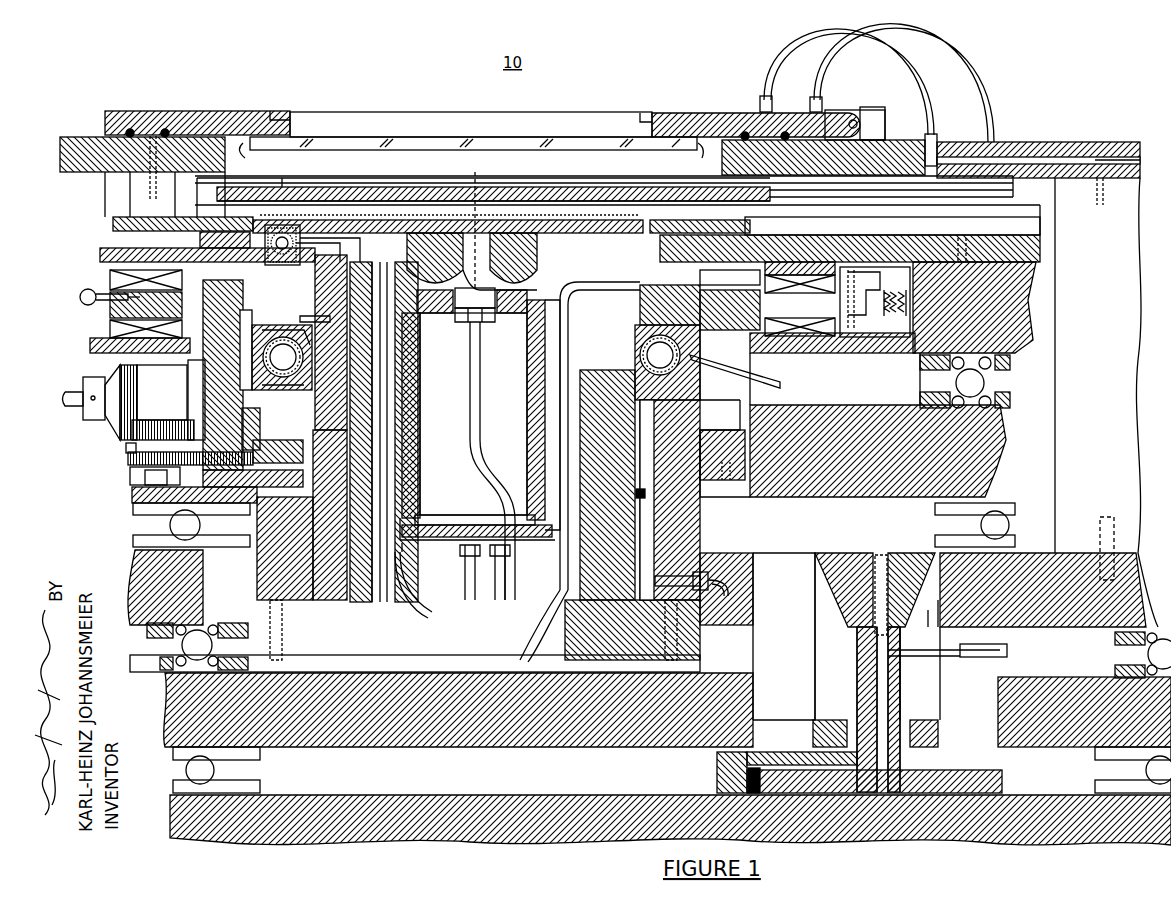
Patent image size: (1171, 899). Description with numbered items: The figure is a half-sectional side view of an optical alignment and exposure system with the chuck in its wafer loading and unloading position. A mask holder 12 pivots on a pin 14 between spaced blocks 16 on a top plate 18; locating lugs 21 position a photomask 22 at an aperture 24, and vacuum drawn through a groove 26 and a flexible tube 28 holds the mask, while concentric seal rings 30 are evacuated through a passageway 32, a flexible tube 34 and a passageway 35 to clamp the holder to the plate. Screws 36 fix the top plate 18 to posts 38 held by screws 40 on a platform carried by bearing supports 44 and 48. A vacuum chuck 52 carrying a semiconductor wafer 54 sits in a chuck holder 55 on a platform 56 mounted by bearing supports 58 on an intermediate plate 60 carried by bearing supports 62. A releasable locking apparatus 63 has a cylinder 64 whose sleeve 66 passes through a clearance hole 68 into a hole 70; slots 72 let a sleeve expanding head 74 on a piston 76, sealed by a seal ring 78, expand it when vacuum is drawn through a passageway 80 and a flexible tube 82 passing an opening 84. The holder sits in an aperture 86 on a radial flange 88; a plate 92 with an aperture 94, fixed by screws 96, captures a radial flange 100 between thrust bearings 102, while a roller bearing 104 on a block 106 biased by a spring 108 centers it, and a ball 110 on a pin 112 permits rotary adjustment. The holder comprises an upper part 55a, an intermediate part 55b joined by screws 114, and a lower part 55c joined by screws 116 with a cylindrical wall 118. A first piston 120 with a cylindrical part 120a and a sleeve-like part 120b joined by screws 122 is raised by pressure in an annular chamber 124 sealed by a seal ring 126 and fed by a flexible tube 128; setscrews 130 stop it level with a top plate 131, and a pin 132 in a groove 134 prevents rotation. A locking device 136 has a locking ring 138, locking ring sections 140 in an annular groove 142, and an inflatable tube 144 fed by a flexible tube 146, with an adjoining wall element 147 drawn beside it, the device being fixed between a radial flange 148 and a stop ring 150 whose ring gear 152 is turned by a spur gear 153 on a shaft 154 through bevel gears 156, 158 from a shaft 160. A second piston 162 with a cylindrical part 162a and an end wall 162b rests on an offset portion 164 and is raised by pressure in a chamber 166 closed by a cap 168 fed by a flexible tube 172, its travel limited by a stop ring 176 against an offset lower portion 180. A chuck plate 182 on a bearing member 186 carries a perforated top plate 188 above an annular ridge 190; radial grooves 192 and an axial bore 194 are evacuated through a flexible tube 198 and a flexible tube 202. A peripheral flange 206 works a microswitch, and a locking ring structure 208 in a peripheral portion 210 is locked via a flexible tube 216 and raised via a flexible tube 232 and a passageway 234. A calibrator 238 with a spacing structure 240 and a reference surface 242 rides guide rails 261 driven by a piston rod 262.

The mask holder 12 is at (193, 113).
The pin 14 is at (858, 125).
The spaced blocks 16 is at (873, 110).
The top plate 18 is at (1035, 142).
The locating lugs 21 is at (472, 158).
The photomask 22 is at (488, 140).
The aperture 24 is at (650, 112).
The groove 26 is at (275, 115).
The flexible tube 28 is at (955, 65).
The resilient seal rings 30 is at (172, 147).
The passageway 32 is at (752, 142).
The flexible tube 34 is at (762, 70).
The passageway 35 is at (1140, 160).
The screws 36 is at (1100, 213).
The posts 38 is at (1152, 478).
The screws 40 is at (1102, 517).
The bearing supports 44 is at (1130, 653).
The bearing supports 48 is at (1085, 771).
The vacuum chuck 52 is at (340, 272).
The semiconductor wafer 54 is at (622, 215).
The chuck holder 55 is at (110, 290).
The annular upper part 55a is at (190, 388).
The annular intermediate part 55b is at (258, 578).
The annular lower part 55c is at (380, 645).
The horizontally movable platform 56 is at (1018, 338).
The bearing supports 58 is at (932, 380).
The intermediate plate 60 is at (990, 482).
The bearing supports 62 is at (950, 525).
The releasable locking apparatus 63 is at (812, 732).
The cylinder 64 is at (717, 768).
The sleeve 66 is at (940, 735).
The enlarged clearance hole 68 is at (998, 696).
The hole 70 is at (940, 600).
The slots 72 is at (792, 650).
The sleeve expanding head 74 is at (850, 553).
The piston 76 is at (962, 796).
The peripheral seal ring 78 is at (754, 796).
The passageway 80 is at (878, 776).
The flexible tube 82 is at (1005, 646).
The opening 84 is at (940, 618).
The aperture 86 is at (762, 352).
The radial flange 88 is at (806, 355).
The plate 92 is at (1045, 258).
The aperture 94 is at (700, 248).
The screws 96 is at (990, 250).
The radial flange 100 is at (775, 270).
The thrust bearings 102 is at (824, 346).
The roller bearing 104 is at (858, 312).
The radially slidable block 106 is at (896, 280).
The spring 108 is at (896, 301).
The ball 110 is at (80, 297).
The pin 112 is at (132, 298).
The screws 114 is at (746, 466).
The screws 116 is at (680, 645).
The cylindrical wall 118 is at (345, 528).
The first piston 120 is at (312, 535).
The hollow cylindrical part 120a is at (527, 376).
The sleeve-like part 120b is at (622, 410).
The screws 122 is at (646, 322).
The annular chamber 124 is at (652, 548).
The peripheral seal ring 126 is at (648, 492).
The flexible tube 128 is at (710, 580).
The setscrews 130 is at (590, 285).
The top plate 131 is at (113, 226).
The pin 132 is at (300, 319).
The longitudinally extending groove 134 is at (340, 343).
The locking device 136 is at (706, 326).
The locking ring 138 is at (240, 330).
The locking ring sections 140 is at (306, 386).
The annular groove 142 is at (238, 364).
The resilient inflatable tube 144 is at (302, 360).
The flexible tube 146 is at (782, 384).
The wall 147 is at (748, 435).
The radial flange 148 is at (240, 292).
The stop ring 150 is at (242, 425).
The ring gear 152 is at (298, 455).
The spur gear 153 is at (128, 460).
The shaft 154 is at (130, 478).
The bevel gear 156 is at (126, 449).
The bevel gear 158 is at (140, 388).
The shaft 160 is at (62, 384).
The second piston 162 is at (534, 404).
The hollow cylindrical part 162a is at (416, 403).
The end wall 162b is at (426, 332).
The offset inner peripheral portion 164 is at (532, 274).
The cylindrical chamber 166 is at (444, 442).
The cap 168 is at (440, 550).
The flexible tube 172 is at (465, 586).
The stop ring 176 is at (422, 510).
The offset lower portion 180 is at (420, 472).
The chuck plate 182 is at (310, 222).
The bearing member 186 is at (435, 301).
The perforated top plate 188 is at (435, 258).
The annular ridge 190 is at (378, 187).
The radial grooves 192 is at (513, 258).
The axial bore 194 is at (491, 305).
The flexible tube 198 is at (466, 372).
The flexible tube 202 is at (506, 614).
The peripheral flange 206 is at (250, 220).
The locking ring structure 208 is at (702, 286).
The peripheral portion 210 is at (730, 310).
The flexible tube 216 is at (410, 618).
The flexible tube 232 is at (610, 626).
The passageway 234 is at (670, 305).
The calibrator 238 is at (515, 172).
The spacing structure 240 is at (333, 180).
The reference surface 242 is at (278, 180).
The guide rails 261 is at (1018, 207).
The piston rod 262 is at (857, 195).